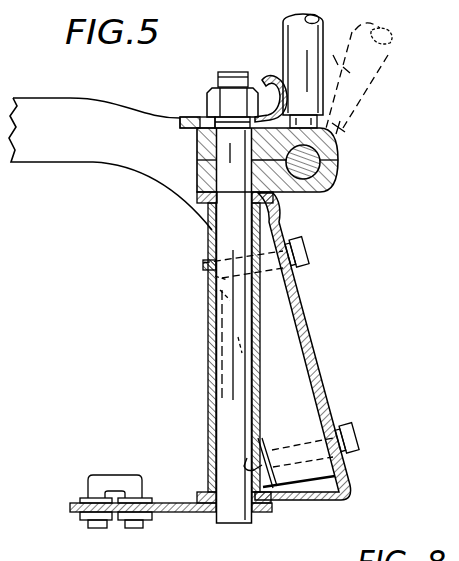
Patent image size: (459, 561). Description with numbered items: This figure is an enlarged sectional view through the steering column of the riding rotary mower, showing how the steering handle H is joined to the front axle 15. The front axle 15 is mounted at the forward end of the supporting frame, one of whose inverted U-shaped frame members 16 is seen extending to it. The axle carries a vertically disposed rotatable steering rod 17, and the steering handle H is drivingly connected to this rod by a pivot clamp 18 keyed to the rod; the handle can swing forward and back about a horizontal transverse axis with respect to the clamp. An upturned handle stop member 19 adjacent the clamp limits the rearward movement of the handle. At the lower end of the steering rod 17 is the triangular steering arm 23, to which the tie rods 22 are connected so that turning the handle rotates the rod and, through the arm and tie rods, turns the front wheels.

The front axle 15 is at (303, 328).
The frame members 16 is at (79, 141).
The steering rod 17 is at (235, 72).
The pivot clamp 18 is at (323, 181).
The handle stop member 19 is at (277, 80).
The tie rods 22 is at (110, 477).
The steering arm 23 is at (168, 508).
The steering handle H is at (312, 55).